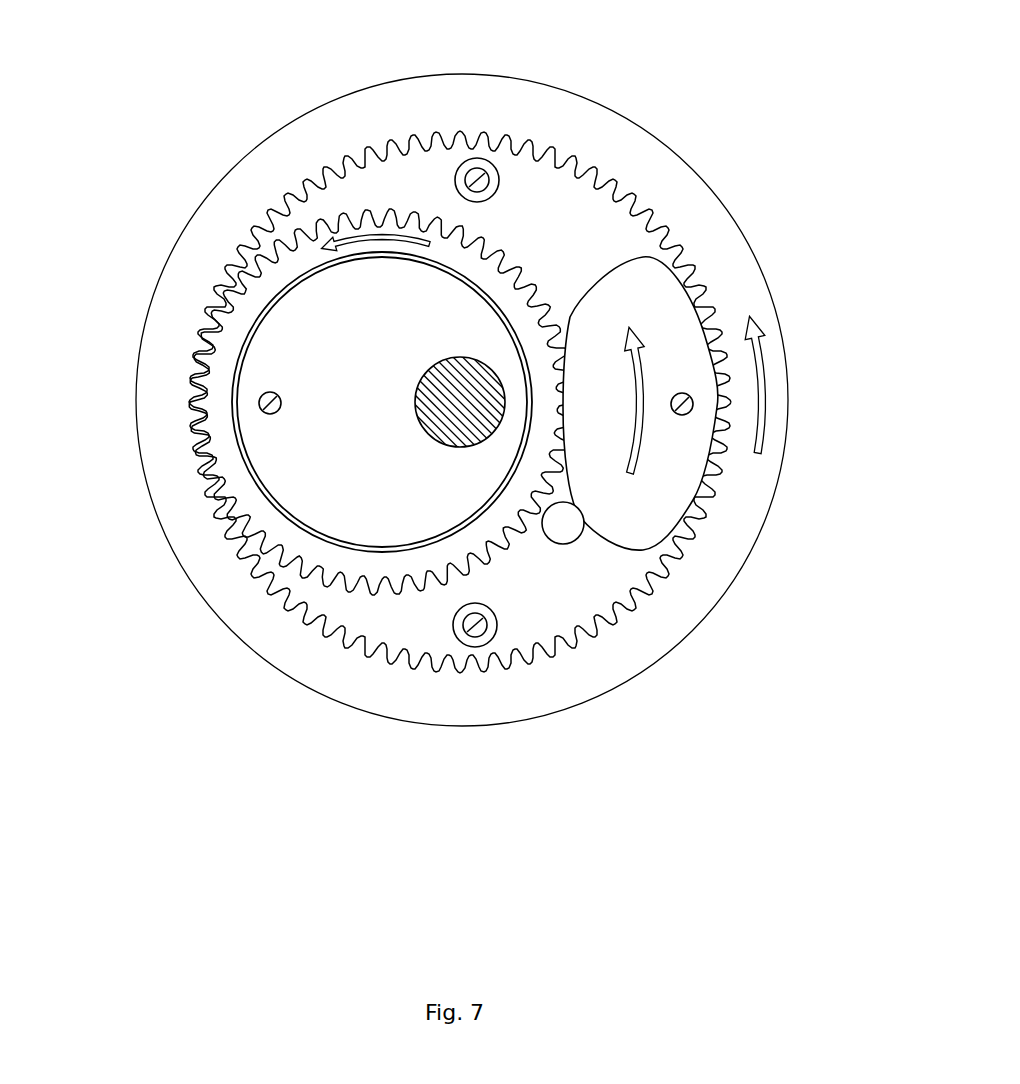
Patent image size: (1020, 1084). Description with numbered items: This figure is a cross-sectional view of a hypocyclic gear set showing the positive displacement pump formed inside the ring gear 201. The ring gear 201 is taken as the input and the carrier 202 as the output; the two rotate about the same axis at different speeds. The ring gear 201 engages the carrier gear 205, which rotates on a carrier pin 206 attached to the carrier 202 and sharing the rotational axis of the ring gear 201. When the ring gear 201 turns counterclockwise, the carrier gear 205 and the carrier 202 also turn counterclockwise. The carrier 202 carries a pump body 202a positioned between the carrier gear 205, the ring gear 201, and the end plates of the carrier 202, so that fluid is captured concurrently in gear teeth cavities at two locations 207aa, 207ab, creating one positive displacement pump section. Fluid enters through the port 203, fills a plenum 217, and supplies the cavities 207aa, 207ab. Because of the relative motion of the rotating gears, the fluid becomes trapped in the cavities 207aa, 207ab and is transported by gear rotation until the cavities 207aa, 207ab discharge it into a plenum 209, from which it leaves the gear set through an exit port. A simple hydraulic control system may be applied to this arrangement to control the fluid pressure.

The ring gear 201 is at (542, 112).
The carrier gear 205 is at (260, 293).
The carrier pin 206 is at (270, 443).
The carrier 202 is at (455, 422).
The pump body 202a is at (660, 462).
The gear teeth cavity 207aa is at (570, 382).
The gear teeth cavity 207ab is at (705, 400).
The port 203 is at (565, 528).
The plenum 209 is at (570, 233).
The plenum 217 is at (515, 607).